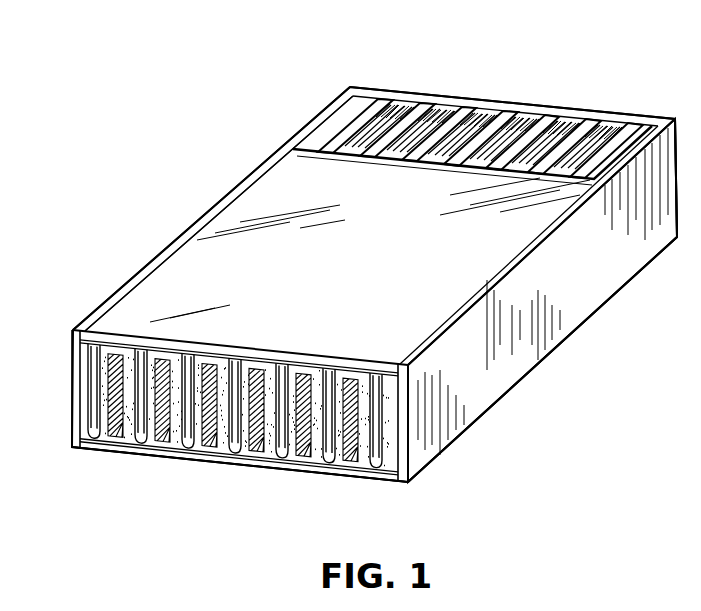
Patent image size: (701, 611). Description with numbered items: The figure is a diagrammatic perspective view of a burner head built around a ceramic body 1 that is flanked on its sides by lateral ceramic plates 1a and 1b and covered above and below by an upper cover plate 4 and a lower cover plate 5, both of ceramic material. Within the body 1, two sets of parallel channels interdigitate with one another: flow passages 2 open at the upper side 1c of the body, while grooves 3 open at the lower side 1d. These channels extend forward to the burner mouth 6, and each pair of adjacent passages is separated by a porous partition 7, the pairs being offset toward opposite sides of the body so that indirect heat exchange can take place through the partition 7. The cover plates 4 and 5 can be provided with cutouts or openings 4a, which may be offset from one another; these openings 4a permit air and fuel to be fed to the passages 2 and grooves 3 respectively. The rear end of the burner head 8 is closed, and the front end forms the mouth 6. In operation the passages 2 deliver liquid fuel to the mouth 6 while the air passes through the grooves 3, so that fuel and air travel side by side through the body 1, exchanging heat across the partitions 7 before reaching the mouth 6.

The ceramic body 1 is at (404, 408).
The lateral ceramic plate 1a is at (612, 243).
The lateral ceramic plate 1b is at (202, 402).
The upper side of the body 1c is at (235, 360).
The lower side of the body 1d is at (240, 475).
The flow passages 2 is at (343, 128).
The grooves 3 is at (248, 427).
The upper cover plate 4 is at (246, 218).
The cutouts or openings 4a is at (557, 130).
The lower cover plate 5 is at (280, 460).
The burner mouth 6 is at (76, 328).
The partition 7 is at (245, 361).
The rear end of the burner head 8 is at (637, 118).